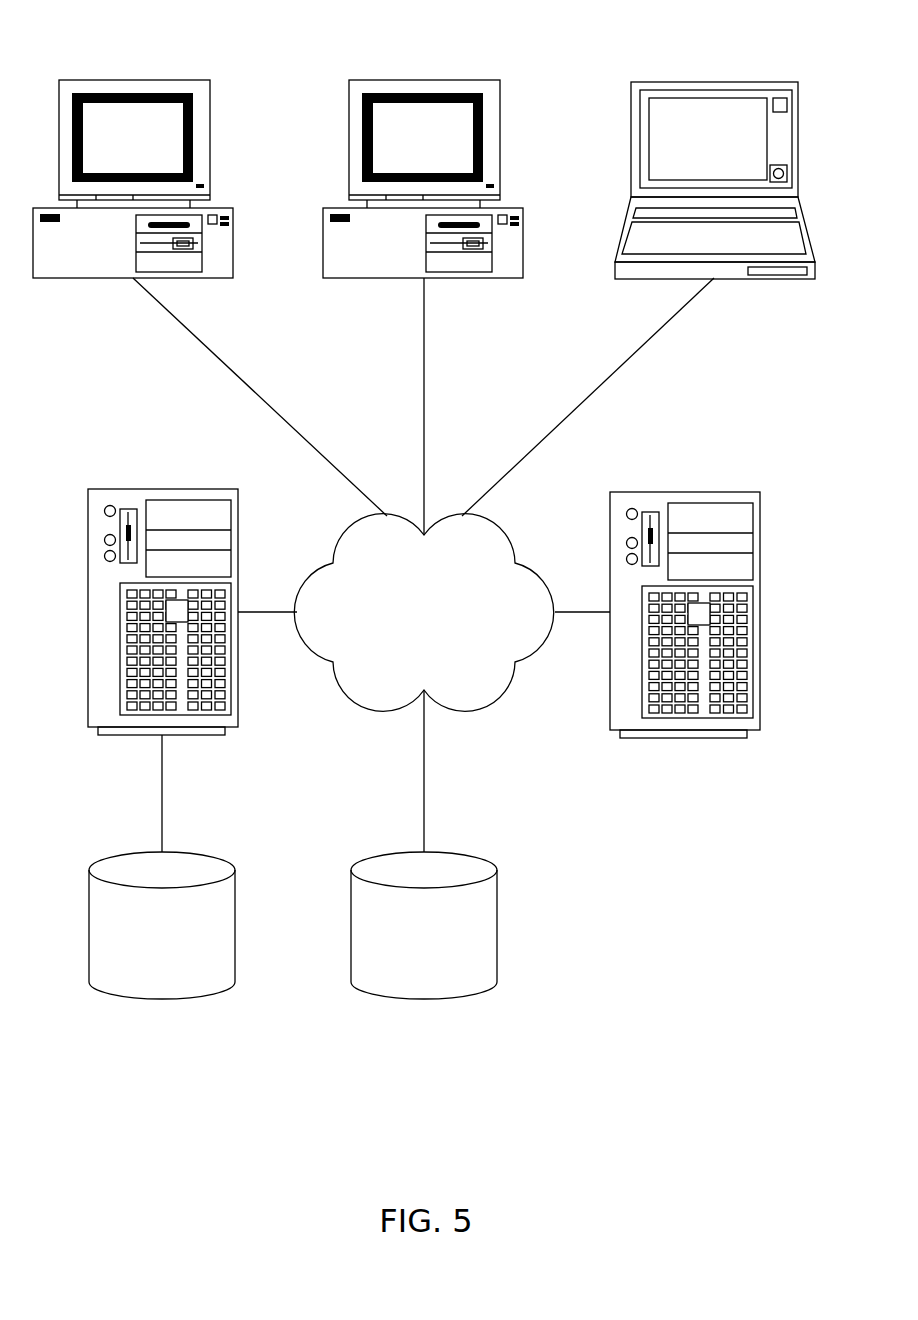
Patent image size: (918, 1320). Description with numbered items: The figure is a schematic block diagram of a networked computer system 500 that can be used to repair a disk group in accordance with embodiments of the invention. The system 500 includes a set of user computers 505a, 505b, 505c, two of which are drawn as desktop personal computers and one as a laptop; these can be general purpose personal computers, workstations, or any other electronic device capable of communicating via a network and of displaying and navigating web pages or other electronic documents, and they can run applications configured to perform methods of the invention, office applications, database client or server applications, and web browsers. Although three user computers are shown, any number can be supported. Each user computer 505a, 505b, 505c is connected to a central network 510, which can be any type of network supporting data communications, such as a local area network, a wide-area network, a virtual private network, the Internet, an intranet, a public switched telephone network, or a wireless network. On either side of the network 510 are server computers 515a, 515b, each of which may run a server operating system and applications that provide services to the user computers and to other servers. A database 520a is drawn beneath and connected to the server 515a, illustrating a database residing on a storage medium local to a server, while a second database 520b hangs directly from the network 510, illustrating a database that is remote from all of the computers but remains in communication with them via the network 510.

The system 500 is at (424, 563).
The user computer 505a is at (233, 225).
The user computer 505b is at (322, 227).
The user computer 505c is at (631, 180).
The network 510 is at (461, 712).
The server computer 515a is at (88, 612).
The server computer 515b is at (762, 614).
The database 520a is at (162, 998).
The database 520b is at (424, 998).